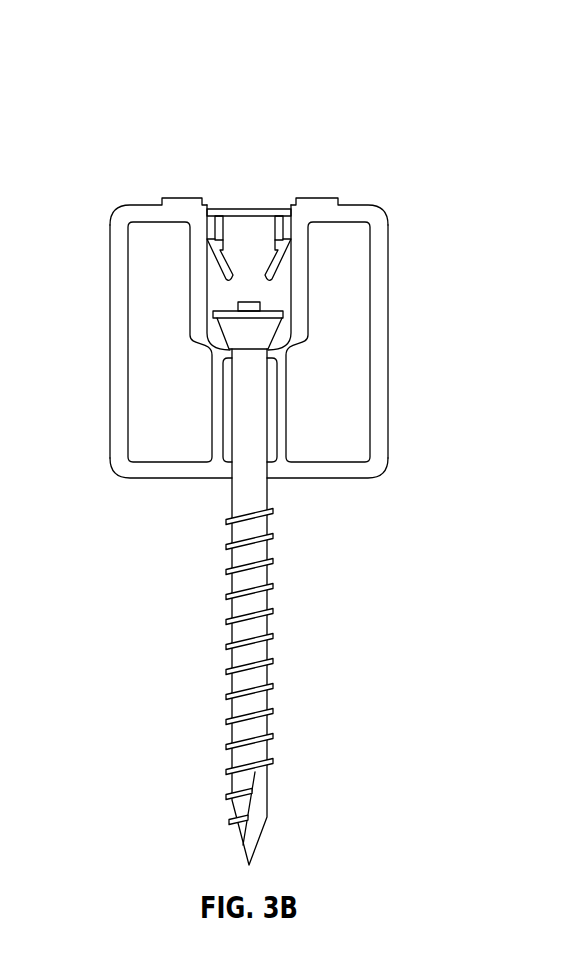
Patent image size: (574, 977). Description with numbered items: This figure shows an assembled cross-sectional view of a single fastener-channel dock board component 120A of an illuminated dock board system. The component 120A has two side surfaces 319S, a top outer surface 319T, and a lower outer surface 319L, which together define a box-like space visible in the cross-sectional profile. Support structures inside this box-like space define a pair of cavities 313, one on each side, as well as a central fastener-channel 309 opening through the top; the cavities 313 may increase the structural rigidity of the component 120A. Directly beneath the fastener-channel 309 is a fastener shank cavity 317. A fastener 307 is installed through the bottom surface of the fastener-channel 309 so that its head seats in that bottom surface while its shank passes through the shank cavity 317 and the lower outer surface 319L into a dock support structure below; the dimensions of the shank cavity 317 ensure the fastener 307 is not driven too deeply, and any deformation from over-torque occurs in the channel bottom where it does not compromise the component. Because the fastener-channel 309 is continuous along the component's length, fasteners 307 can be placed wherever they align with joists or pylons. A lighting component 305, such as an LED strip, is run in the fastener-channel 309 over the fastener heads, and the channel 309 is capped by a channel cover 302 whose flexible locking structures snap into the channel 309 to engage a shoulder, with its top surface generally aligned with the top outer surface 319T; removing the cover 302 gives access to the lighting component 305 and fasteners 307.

The single fastener-channel dock board component 120A is at (355, 64).
The channel cover 302 is at (276, 207).
The lighting component 305 is at (279, 309).
The fastener 307 is at (268, 723).
The fastener-channel 309 is at (250, 253).
The cavity 313 is at (145, 410).
The fastener shank cavity 317 is at (228, 437).
The top outer surface 319T is at (150, 204).
The side surface 319S is at (110, 317).
The lower outer surface 319L is at (313, 479).